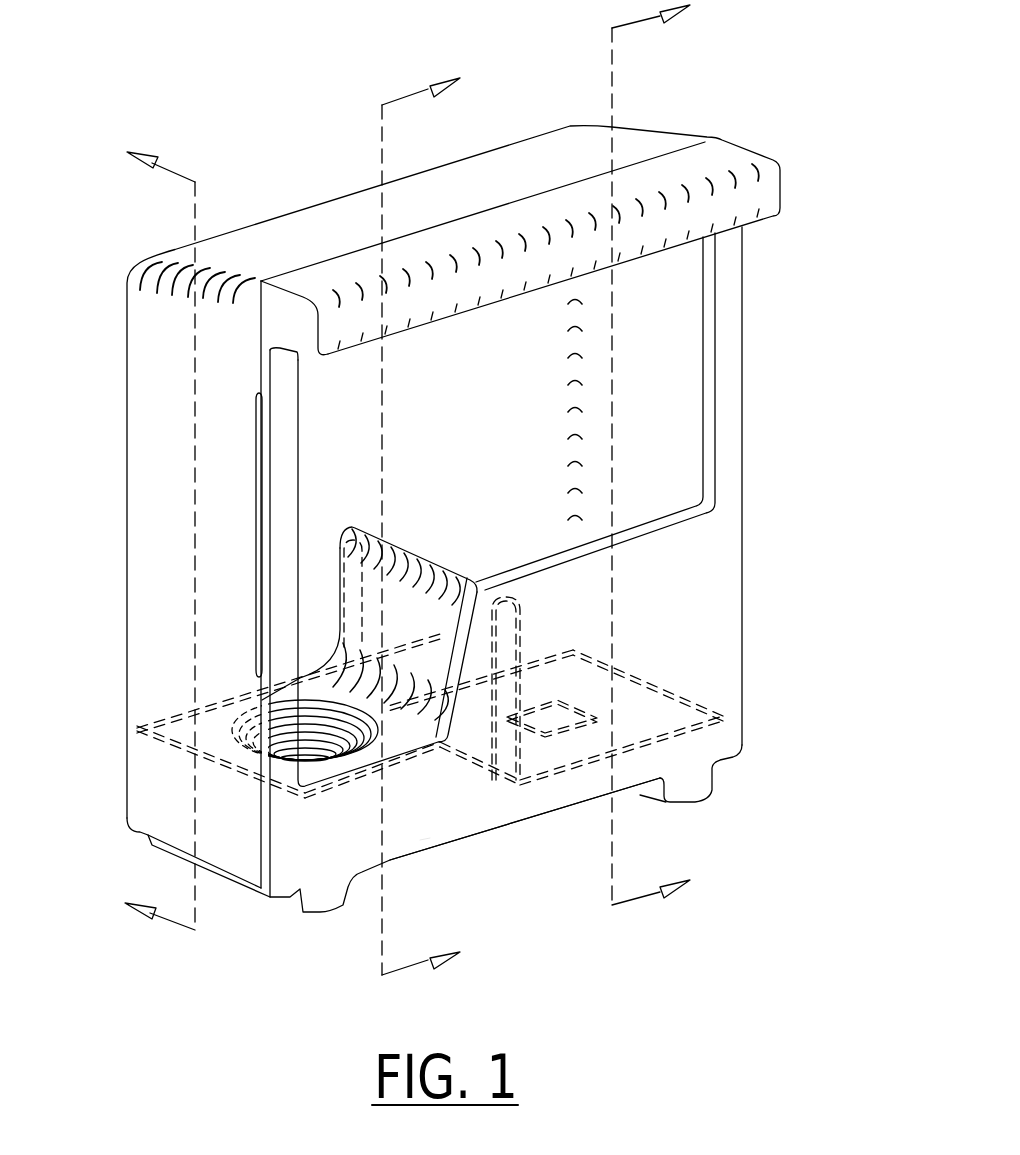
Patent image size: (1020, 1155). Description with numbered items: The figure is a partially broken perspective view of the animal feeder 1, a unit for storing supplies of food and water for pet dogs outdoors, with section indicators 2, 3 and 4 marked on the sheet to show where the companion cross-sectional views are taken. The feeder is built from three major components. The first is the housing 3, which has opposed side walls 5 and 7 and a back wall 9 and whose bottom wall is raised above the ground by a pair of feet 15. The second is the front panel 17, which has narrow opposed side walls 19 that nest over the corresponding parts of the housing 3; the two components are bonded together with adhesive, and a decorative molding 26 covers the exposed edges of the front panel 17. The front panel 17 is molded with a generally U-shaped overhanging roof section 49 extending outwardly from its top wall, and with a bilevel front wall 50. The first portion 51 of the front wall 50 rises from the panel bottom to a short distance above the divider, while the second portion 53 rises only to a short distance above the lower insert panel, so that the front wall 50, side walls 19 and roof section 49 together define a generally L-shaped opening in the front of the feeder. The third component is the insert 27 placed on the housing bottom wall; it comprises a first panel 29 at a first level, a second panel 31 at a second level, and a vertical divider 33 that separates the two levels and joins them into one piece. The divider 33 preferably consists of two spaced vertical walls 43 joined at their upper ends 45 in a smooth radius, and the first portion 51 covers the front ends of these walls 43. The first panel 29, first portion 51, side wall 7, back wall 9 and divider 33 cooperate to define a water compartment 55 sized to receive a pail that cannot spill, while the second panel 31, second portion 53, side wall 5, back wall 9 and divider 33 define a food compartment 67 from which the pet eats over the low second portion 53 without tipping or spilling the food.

The animal feeder 1 is at (778, 464).
The section line 2- 2 is at (175, 553).
The housing 3 is at (78, 566).
The section line 4- 4 is at (637, 466).
The side wall 5 is at (150, 632).
The side wall 7 is at (660, 322).
The back wall 9 is at (450, 405).
The feet 15 is at (322, 898).
The front panel 17 is at (479, 844).
The side walls 19 is at (265, 371).
The decorative molding 26 is at (258, 492).
The insert 27 is at (403, 541).
The first panel 29 is at (738, 692).
The second panel 31 is at (312, 700).
The divider 33 is at (421, 570).
The vertical walls 43 is at (377, 587).
The upper ends 45 is at (455, 585).
The overhanging roof section 49 is at (509, 275).
The front wall 50 is at (487, 812).
The first portion 51 is at (675, 622).
The second portion 53 is at (413, 823).
The water compartment 55 is at (530, 448).
The food compartment 67 is at (312, 582).